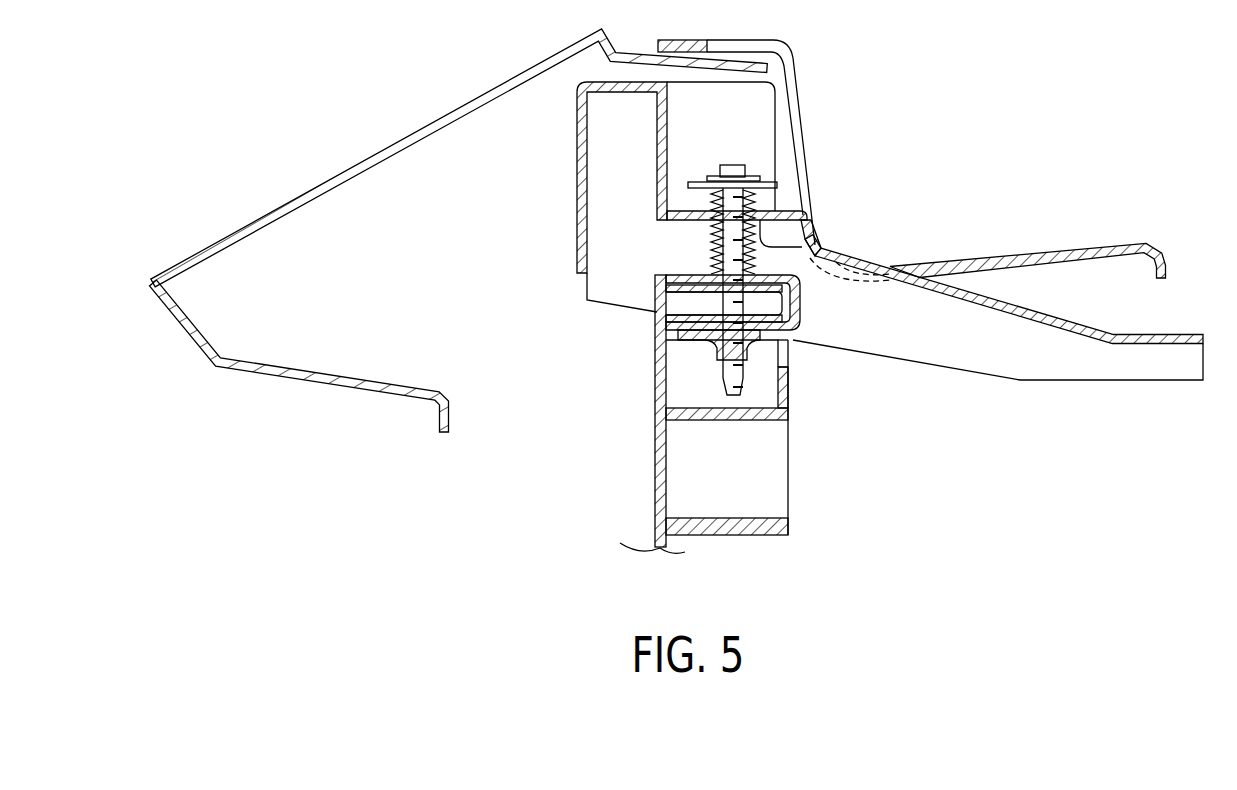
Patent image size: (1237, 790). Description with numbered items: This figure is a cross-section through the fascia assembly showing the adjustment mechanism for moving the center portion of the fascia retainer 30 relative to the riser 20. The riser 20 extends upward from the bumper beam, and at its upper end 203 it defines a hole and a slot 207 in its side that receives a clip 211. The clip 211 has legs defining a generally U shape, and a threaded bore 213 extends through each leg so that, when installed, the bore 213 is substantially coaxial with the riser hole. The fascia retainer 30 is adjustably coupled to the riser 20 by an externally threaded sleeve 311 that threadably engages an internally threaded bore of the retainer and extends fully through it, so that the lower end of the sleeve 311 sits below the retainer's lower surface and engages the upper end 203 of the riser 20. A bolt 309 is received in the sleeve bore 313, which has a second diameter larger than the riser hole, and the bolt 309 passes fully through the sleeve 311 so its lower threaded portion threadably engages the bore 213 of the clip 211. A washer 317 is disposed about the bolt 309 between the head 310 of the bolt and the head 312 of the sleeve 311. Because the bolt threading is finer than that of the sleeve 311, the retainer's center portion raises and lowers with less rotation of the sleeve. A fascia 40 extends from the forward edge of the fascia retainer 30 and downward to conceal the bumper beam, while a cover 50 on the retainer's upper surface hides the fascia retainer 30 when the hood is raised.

The riser 20 is at (662, 470).
The fascia retainer 30 is at (1037, 312).
The fascia 40 is at (378, 148).
The cover 50 is at (1015, 253).
The upper end 203 is at (808, 296).
The slot 207 is at (787, 352).
The clip 211 is at (800, 312).
The bore 213 is at (748, 352).
The bolt 309 is at (727, 233).
The head 310 is at (735, 165).
The sleeve 311 is at (708, 197).
The head 312 is at (771, 187).
The bore 313 is at (756, 206).
The washer 317 is at (753, 176).